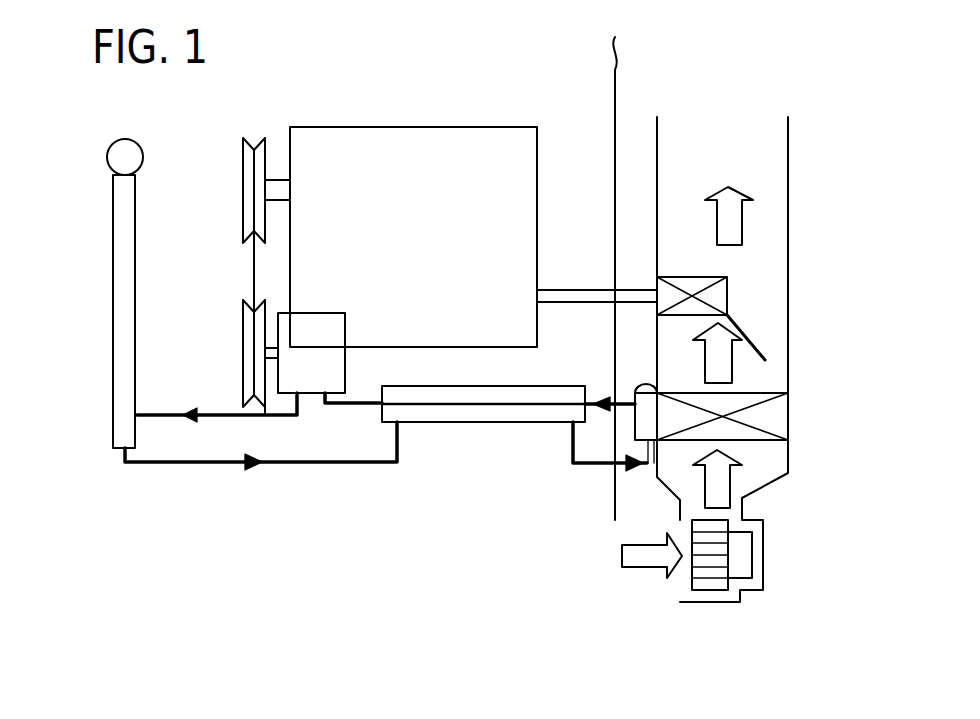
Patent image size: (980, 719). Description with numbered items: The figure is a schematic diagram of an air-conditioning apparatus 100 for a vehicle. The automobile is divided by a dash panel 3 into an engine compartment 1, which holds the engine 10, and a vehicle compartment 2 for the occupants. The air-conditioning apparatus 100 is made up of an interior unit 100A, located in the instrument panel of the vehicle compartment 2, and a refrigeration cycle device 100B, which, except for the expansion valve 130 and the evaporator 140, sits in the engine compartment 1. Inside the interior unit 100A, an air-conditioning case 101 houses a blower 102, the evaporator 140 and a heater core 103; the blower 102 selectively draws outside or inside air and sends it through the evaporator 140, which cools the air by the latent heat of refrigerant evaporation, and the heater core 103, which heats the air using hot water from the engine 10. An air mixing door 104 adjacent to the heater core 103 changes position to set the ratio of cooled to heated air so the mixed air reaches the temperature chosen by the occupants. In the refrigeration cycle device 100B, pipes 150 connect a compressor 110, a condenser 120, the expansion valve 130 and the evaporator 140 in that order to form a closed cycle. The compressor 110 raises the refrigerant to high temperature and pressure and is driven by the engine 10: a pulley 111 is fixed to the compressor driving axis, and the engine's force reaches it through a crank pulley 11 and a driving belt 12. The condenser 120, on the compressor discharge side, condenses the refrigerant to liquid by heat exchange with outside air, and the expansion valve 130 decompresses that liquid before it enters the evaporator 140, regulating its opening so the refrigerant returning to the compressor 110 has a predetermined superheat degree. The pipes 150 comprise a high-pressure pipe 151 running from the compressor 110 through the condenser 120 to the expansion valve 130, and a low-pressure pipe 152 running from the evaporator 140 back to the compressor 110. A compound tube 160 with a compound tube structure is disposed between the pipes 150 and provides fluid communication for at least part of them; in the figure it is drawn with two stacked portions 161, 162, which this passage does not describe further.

The engine compartment 1 is at (595, 77).
The vehicle compartment 2 is at (637, 87).
The dash panel 3 is at (617, 156).
The engine 10 is at (315, 127).
The crank pulley 11 is at (248, 160).
The driving belt 12 is at (252, 262).
The air-conditioning apparatus 100 is at (476, 374).
The interior unit 100A is at (763, 359).
The refrigeration cycle device 100B is at (387, 454).
The air-conditioning case 101 is at (790, 230).
The blower 102 is at (747, 560).
The heater core 103 is at (727, 298).
The air mixing door 104 is at (765, 357).
The compressor 110 is at (283, 322).
The pulley 111 is at (250, 347).
The condenser 120 is at (113, 312).
The expansion valve 130 is at (652, 442).
The evaporator 140 is at (780, 422).
The pipes 150 is at (382, 432).
The high-pressure pipe 151 is at (572, 453).
The low-pressure pipe 152 is at (608, 398).
The compound tube 160 is at (483, 461).
The first heat exchange portion 161 is at (442, 425).
The second heat exchange portion 162 is at (480, 405).